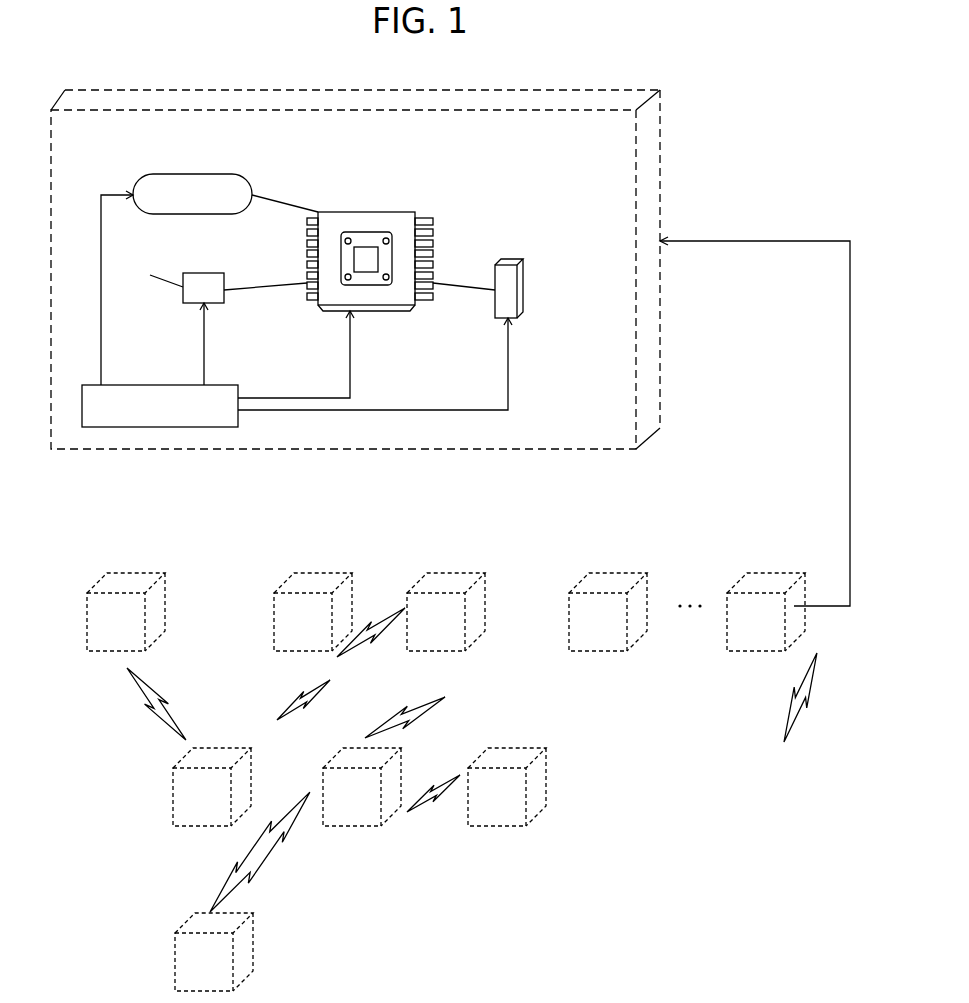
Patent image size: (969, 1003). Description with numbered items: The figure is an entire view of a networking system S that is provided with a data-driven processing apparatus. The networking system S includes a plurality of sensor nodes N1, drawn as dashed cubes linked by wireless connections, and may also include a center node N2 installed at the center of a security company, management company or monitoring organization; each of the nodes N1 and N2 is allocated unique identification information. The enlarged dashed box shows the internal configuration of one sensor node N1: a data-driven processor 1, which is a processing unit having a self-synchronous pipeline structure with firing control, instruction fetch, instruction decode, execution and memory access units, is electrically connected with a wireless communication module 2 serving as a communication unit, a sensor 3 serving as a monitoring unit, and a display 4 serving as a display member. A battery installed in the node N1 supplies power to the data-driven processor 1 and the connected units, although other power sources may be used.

The data-driven processor 1 is at (366, 218).
The wireless communication module 2 is at (203, 280).
The sensor 3 is at (201, 180).
The display 4 is at (513, 262).
The sensor node N1 is at (450, 430).
The center node N2 is at (255, 938).
The networking system S is at (75, 537).